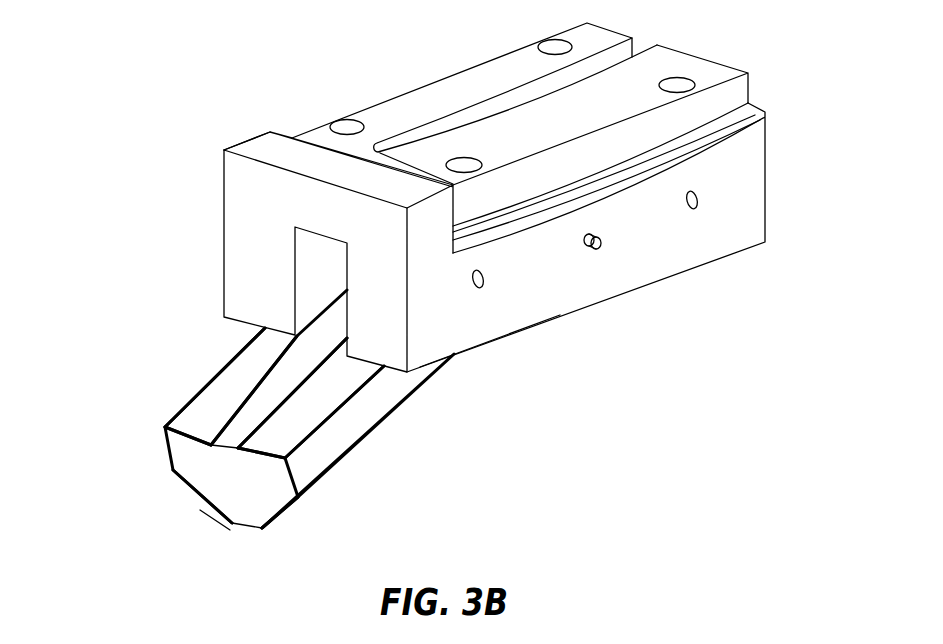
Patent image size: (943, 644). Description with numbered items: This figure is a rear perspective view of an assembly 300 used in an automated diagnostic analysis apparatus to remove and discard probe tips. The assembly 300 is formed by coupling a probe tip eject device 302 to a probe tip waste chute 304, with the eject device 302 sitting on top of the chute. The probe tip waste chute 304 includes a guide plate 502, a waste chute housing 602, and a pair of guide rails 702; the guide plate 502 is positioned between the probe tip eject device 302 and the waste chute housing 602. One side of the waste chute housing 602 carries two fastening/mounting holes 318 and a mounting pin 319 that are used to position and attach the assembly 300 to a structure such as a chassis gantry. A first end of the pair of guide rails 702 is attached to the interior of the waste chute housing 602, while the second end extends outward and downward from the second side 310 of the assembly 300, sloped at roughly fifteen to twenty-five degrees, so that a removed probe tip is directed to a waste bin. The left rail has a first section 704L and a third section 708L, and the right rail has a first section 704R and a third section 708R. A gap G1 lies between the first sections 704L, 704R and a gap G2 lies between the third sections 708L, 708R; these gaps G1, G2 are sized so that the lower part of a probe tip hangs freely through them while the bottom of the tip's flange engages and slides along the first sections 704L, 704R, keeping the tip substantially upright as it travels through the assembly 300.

The assembly 300 is at (224, 80).
The probe tip eject device 302 is at (447, 74).
The probe tip waste chute 304 is at (515, 378).
The second side 310 is at (178, 544).
The fastening/mounting holes 318 is at (488, 279).
The mounting pin 319 is at (604, 242).
The guide plate 502 is at (735, 118).
The waste chute housing 602 is at (223, 256).
The pair of guide rails 702 is at (286, 434).
The first section 704L is at (262, 362).
The first section 704R is at (330, 390).
The third section 708L is at (200, 500).
The third section 708R is at (282, 520).
The gap G1 is at (237, 449).
The gap G2 is at (261, 533).